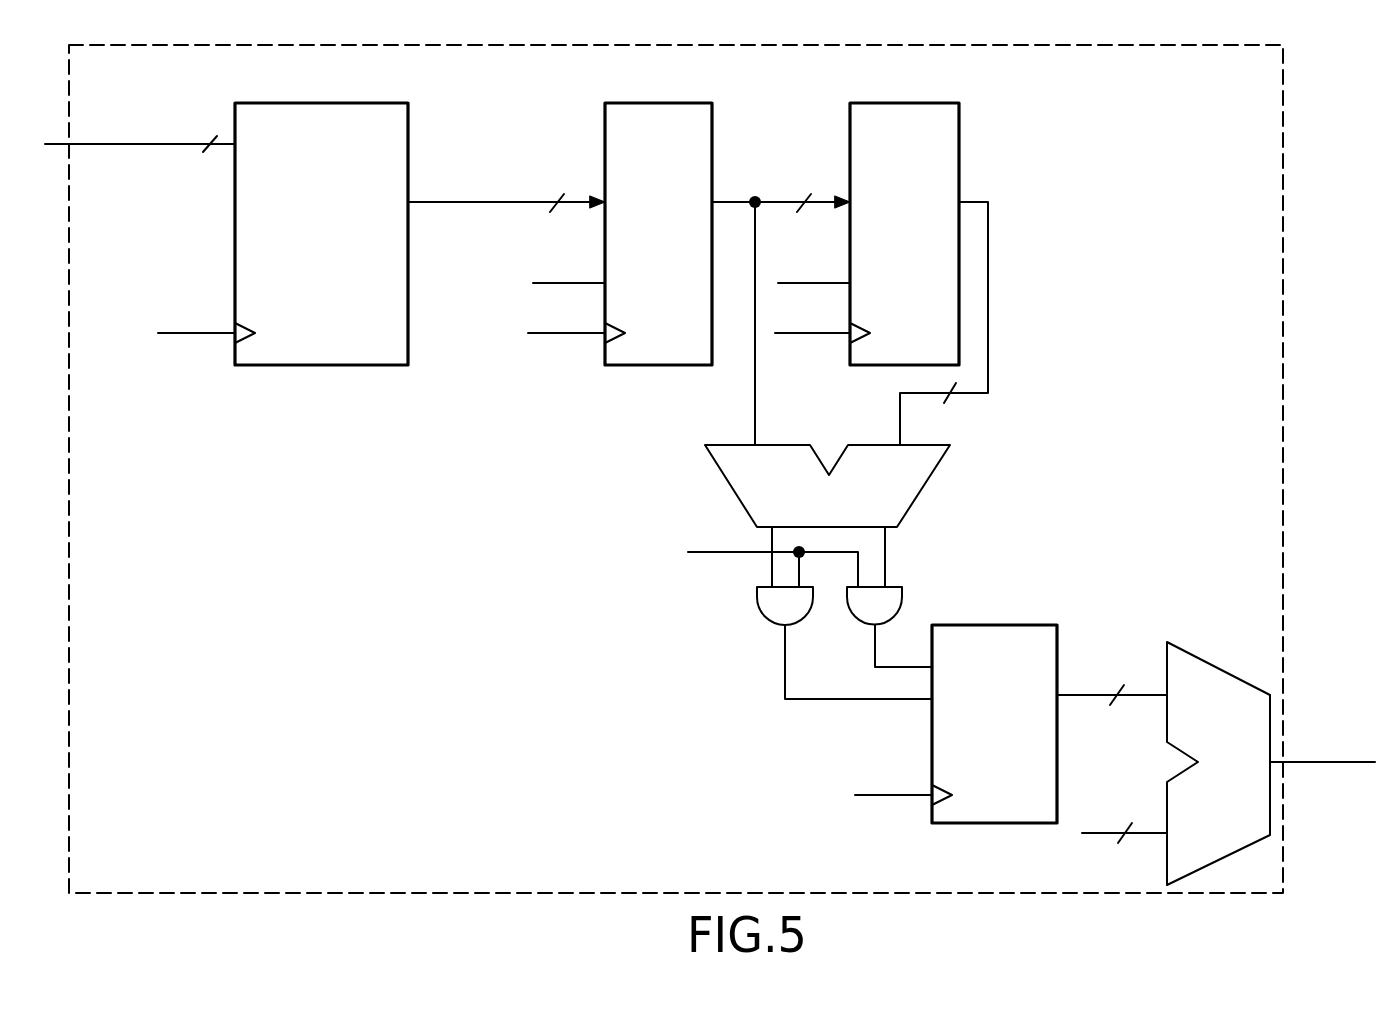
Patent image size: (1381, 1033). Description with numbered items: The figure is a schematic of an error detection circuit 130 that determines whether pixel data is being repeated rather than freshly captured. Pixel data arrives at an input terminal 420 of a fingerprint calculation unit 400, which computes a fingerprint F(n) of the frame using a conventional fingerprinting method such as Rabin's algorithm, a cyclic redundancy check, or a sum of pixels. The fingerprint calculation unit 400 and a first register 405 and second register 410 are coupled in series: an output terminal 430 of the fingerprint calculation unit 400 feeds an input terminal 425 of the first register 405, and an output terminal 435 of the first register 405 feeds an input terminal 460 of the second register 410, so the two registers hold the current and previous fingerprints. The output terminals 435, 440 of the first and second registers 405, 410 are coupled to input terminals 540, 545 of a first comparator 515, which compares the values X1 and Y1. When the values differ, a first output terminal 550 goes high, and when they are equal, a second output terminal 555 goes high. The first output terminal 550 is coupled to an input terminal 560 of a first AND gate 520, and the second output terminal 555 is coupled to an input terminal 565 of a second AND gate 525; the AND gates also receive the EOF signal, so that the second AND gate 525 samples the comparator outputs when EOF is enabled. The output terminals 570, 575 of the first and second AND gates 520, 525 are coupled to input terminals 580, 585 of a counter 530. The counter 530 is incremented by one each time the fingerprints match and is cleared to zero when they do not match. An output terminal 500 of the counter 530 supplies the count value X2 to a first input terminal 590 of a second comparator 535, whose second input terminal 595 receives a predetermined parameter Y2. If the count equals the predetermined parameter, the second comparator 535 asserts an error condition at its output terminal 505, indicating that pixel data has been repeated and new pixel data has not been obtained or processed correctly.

The error detection circuit 130 is at (1285, 145).
The fingerprint calculation unit 400 is at (410, 115).
The first register 405 is at (712, 107).
The second register 410 is at (959, 118).
The input terminal 420 is at (235, 143).
The input terminal 425 is at (603, 200).
The output terminal 430 is at (408, 203).
The output terminal 435 is at (713, 202).
The output terminal 440 is at (959, 200).
The input terminal 460 is at (848, 198).
The output terminal 500 is at (1057, 696).
The output terminal 505 is at (1272, 764).
The first comparator 515 is at (937, 467).
The first AND gate 520 is at (755, 614).
The second AND gate 525 is at (902, 596).
The counter 530 is at (1058, 645).
The second comparator 535 is at (1196, 655).
The input terminal 540 is at (750, 444).
The input terminal 545 is at (902, 440).
The first output terminal 550 is at (770, 530).
The second output terminal 555 is at (887, 530).
The input terminal 560 is at (762, 587).
The input terminal 565 is at (885, 587).
The output terminal 570 is at (785, 626).
The output terminal 575 is at (870, 624).
The input terminal 580 is at (932, 668).
The input terminal 585 is at (930, 702).
The first input terminal 590 is at (1167, 690).
The second input terminal 595 is at (1165, 832).